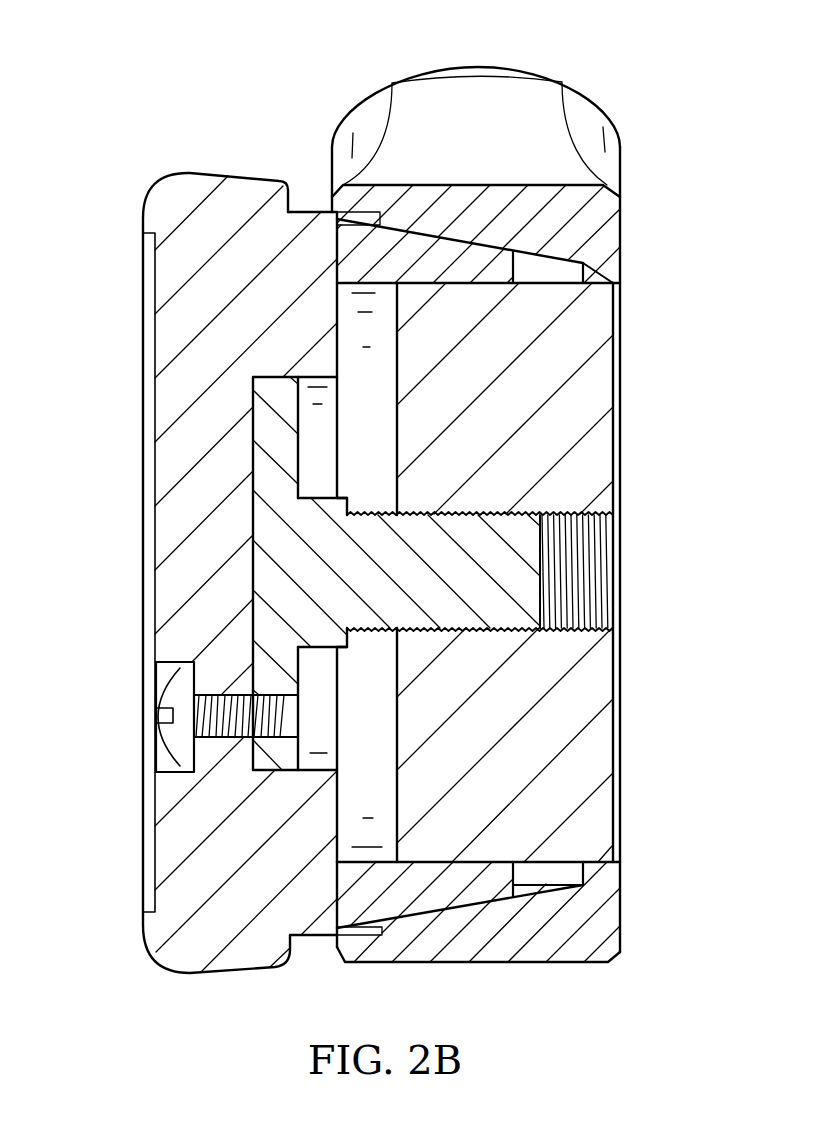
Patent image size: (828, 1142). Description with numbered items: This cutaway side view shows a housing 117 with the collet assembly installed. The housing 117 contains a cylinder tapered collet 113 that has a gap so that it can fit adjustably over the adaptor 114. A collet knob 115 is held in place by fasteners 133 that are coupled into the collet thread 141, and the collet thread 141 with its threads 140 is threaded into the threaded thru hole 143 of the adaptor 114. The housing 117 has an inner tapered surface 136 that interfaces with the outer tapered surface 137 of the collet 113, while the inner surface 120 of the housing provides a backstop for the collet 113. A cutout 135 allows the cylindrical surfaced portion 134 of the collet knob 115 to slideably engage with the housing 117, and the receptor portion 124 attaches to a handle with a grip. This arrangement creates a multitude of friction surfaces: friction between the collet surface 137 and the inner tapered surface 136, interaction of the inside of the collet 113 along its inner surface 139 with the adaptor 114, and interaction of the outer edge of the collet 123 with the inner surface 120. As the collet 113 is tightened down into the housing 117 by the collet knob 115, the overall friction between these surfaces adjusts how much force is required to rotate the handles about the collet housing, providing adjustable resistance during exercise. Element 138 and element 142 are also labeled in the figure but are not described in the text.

The receptor portion 124 is at (477, 90).
The cylindrical surfaced portion 134 is at (310, 208).
The outer tapered surface 137 is at (372, 226).
The cutout 135 is at (352, 226).
The inner surface 120 is at (583, 250).
The slot bottom 138 is at (540, 283).
The inner tapered surface 136 is at (565, 290).
The inner surface 139 is at (382, 291).
The collet thread 141 is at (273, 577).
The threads 140 is at (525, 545).
The threaded thru hole 143 is at (598, 604).
The adaptor 114 is at (600, 730).
The fasteners 133 is at (178, 738).
The collet knob 115 is at (238, 955).
The lower step 142 is at (335, 913).
The collet 113 is at (403, 905).
The housing 117 is at (565, 952).
The outer edge of the collet 123 is at (522, 880).